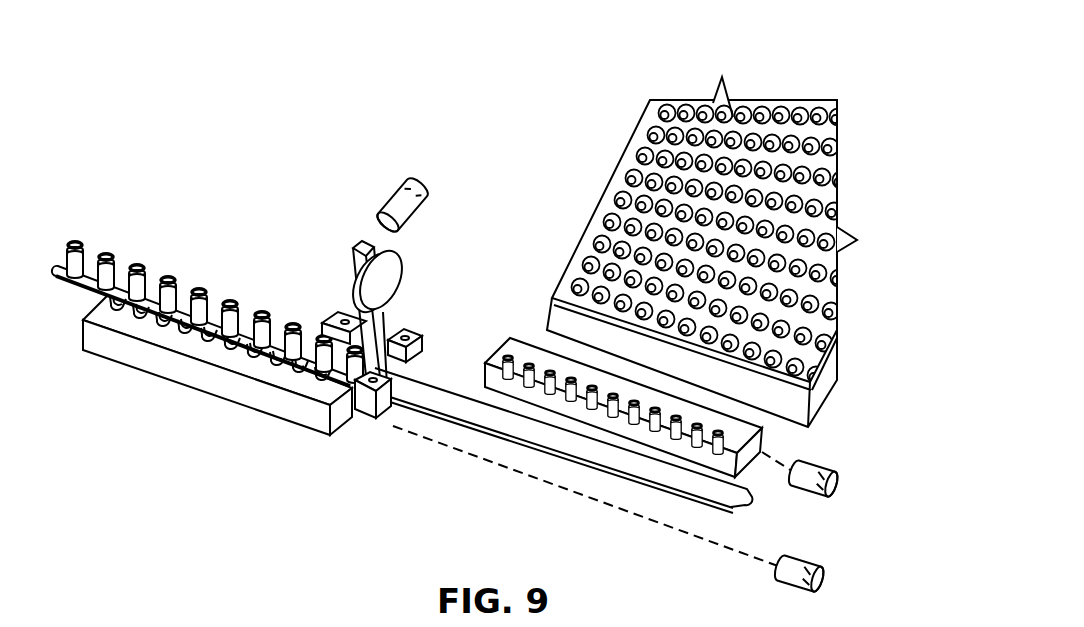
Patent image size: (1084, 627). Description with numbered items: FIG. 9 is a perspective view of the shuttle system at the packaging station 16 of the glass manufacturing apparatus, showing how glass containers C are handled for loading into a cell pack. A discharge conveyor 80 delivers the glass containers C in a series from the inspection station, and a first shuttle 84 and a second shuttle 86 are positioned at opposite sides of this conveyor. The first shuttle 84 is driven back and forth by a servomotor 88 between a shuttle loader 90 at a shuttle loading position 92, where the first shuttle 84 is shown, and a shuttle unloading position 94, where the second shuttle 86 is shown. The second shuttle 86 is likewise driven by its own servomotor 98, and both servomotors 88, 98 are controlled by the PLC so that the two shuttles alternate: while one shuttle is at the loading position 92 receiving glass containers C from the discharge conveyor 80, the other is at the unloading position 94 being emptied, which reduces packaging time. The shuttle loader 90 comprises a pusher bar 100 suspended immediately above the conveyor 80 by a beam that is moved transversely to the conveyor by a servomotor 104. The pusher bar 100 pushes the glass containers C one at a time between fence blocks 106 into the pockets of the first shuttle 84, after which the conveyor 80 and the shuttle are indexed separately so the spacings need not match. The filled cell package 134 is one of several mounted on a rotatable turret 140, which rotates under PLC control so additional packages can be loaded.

The packaging station 16 is at (187, 44).
The discharge conveyor 80 is at (484, 421).
The first shuttle 84 is at (292, 422).
The second shuttle 86 is at (514, 340).
The servomotor 88 is at (818, 556).
The shuttle loader 90 is at (309, 297).
The shuttle loading position 92 is at (178, 451).
The shuttle unloading position 94 is at (530, 502).
The servomotor 98 is at (826, 460).
The pusher bar 100 is at (386, 313).
The servomotor 104 is at (380, 206).
The fence blocks 106 is at (350, 320).
The cell package 134 is at (607, 187).
The rotatable turret 140 is at (825, 386).
The glass containers C is at (106, 256).